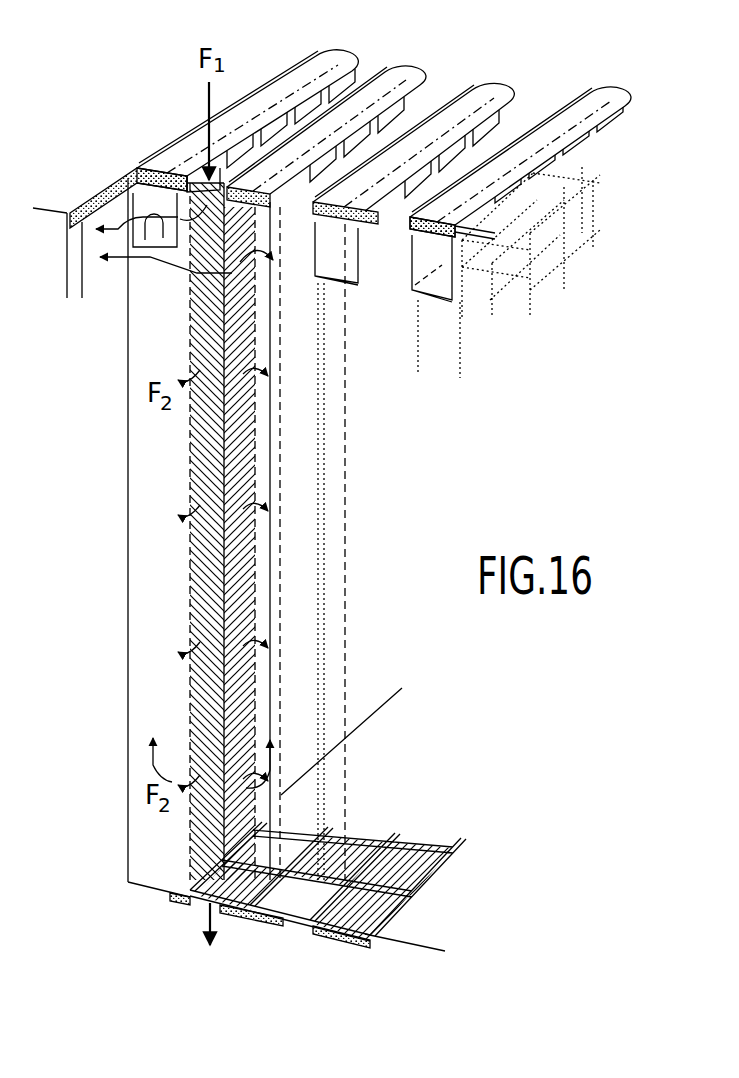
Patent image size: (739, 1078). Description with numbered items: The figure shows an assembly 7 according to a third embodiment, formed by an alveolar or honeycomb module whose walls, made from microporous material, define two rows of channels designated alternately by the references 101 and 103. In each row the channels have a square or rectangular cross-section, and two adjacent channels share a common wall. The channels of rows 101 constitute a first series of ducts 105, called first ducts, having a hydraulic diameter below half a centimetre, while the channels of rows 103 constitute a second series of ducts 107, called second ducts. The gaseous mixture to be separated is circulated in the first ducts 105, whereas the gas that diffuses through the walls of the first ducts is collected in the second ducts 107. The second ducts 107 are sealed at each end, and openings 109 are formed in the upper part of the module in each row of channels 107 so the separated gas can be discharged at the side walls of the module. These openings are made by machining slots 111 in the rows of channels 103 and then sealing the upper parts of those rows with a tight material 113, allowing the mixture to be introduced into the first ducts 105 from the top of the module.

The assembly 7 is at (119, 573).
The rows of channels 101 is at (373, 63).
The rows of channels 103 is at (493, 87).
The first ducts 105 is at (315, 85).
The second ducts 107 is at (563, 203).
The openings 109 is at (433, 300).
The slots 111 is at (350, 284).
The tight material 113 is at (445, 206).